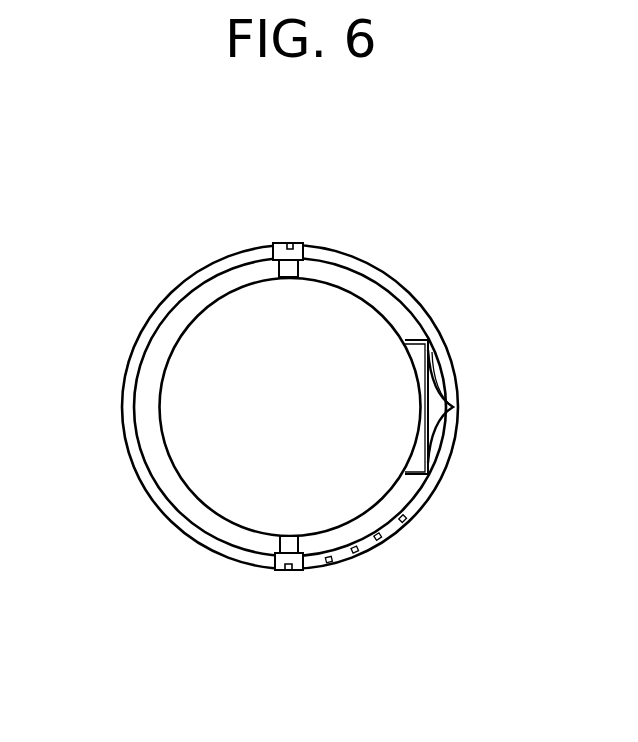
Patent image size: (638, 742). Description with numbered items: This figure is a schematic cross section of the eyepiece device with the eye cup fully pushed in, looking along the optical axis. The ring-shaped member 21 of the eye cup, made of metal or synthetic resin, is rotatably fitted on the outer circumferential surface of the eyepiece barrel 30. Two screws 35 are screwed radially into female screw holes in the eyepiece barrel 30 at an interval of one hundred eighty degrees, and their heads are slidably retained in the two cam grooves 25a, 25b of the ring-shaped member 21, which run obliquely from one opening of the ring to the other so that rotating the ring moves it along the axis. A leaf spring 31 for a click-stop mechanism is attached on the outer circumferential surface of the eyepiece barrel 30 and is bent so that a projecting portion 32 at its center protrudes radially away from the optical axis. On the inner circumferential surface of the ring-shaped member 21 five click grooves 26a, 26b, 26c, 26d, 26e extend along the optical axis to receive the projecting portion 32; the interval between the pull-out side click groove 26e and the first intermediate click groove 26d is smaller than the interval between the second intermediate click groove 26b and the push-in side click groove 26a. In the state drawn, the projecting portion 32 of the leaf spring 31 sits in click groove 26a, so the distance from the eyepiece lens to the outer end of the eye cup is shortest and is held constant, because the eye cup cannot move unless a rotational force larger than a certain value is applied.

The ring-shaped member 21 is at (124, 371).
The eyepiece barrel 30 is at (187, 510).
The cam groove 25a is at (266, 244).
The cam groove 25b is at (275, 568).
The screw 35 is at (298, 243).
The leaf spring 31 is at (405, 342).
The projecting portion 32 is at (440, 392).
The click groove 26a is at (452, 407).
The click groove 26b is at (403, 519).
The click groove 26c is at (378, 537).
The click groove 26d is at (355, 550).
The click groove 26e is at (329, 560).